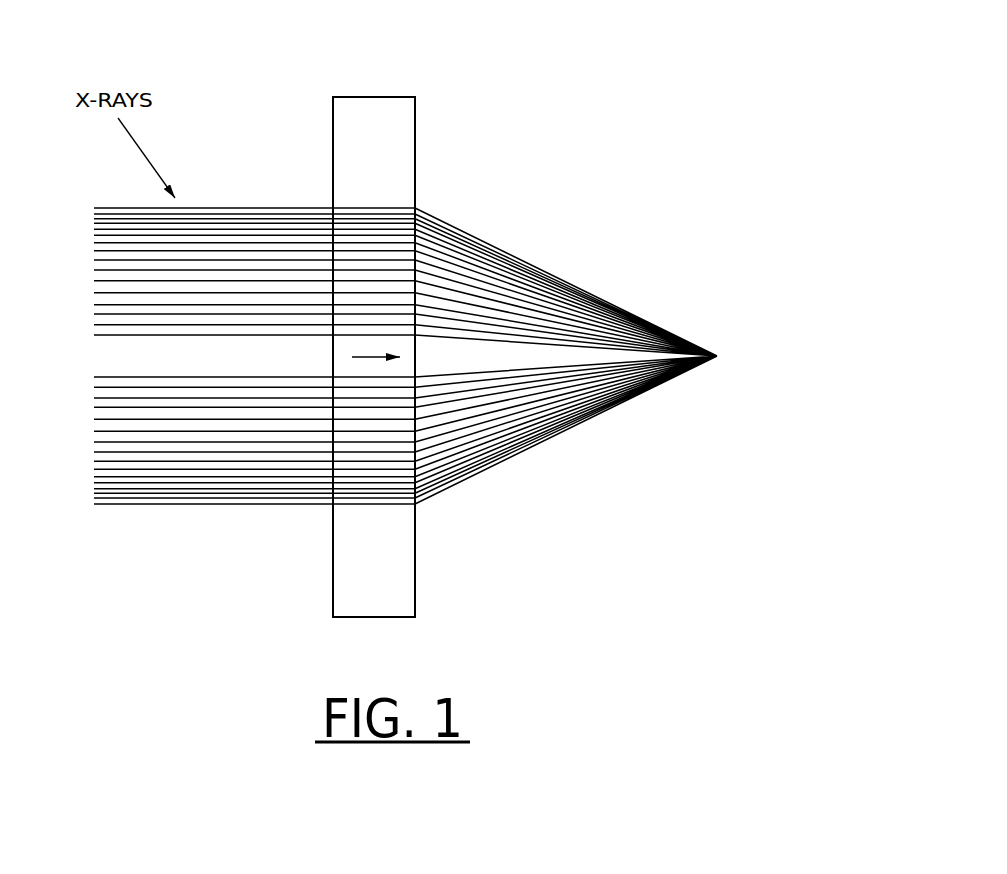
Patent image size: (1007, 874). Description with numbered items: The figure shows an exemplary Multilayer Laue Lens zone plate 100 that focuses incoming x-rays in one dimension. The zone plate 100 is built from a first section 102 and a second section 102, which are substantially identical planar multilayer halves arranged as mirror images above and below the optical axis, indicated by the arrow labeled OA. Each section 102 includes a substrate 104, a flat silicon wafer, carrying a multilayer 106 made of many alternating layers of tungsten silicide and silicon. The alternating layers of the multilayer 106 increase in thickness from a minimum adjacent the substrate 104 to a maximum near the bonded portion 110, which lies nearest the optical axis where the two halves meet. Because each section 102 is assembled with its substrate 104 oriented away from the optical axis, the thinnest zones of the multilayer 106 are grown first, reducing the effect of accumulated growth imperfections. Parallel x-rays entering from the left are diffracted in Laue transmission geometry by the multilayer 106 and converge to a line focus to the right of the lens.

The Multilayer Laue Lens zone plate 100 is at (264, 133).
The section 102 is at (326, 148).
The substrate 104 is at (416, 124).
The multilayer 106 is at (373, 270).
The bonded portion 110 is at (346, 368).